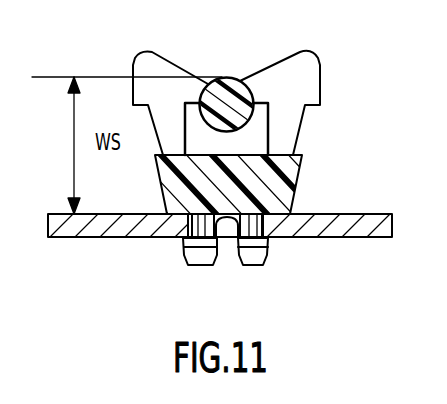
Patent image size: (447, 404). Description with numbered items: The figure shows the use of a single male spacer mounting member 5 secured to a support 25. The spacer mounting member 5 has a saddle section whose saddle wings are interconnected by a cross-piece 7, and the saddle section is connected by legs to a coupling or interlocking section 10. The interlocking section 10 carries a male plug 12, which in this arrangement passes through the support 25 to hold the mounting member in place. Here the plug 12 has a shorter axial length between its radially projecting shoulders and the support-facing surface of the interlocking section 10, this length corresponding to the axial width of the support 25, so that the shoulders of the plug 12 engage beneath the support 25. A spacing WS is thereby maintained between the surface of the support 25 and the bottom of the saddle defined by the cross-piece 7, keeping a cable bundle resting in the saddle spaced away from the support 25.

The spacer mounting member 5 is at (277, 75).
The cross-piece 7 is at (228, 82).
The interlocking section 10 is at (288, 177).
The male plug 12 is at (258, 262).
The support 25 is at (347, 230).